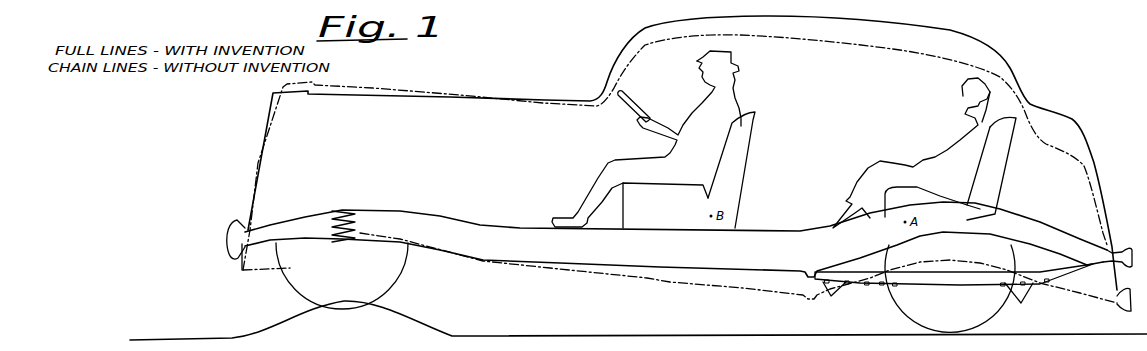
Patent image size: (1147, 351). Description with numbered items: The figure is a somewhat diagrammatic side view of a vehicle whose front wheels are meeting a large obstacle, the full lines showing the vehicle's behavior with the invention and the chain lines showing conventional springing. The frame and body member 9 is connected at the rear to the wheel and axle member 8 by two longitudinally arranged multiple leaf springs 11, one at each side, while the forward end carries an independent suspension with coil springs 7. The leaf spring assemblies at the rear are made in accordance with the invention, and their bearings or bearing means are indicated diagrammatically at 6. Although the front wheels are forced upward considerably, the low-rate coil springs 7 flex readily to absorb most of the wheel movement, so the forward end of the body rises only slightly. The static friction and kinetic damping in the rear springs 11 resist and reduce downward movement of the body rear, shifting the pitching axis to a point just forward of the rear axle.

The bearing means 6 is at (928, 301).
The coil springs 7 is at (345, 246).
The wheel and axle member 8 is at (903, 300).
The frame and body member 9 is at (748, 237).
The multiple leaf springs 11 is at (950, 284).